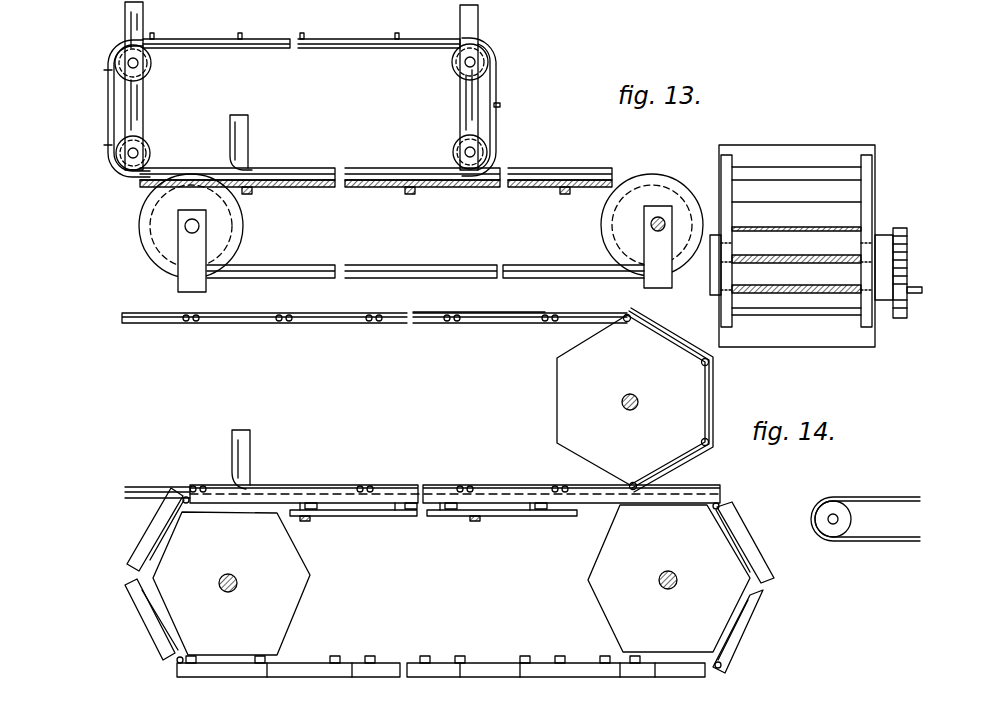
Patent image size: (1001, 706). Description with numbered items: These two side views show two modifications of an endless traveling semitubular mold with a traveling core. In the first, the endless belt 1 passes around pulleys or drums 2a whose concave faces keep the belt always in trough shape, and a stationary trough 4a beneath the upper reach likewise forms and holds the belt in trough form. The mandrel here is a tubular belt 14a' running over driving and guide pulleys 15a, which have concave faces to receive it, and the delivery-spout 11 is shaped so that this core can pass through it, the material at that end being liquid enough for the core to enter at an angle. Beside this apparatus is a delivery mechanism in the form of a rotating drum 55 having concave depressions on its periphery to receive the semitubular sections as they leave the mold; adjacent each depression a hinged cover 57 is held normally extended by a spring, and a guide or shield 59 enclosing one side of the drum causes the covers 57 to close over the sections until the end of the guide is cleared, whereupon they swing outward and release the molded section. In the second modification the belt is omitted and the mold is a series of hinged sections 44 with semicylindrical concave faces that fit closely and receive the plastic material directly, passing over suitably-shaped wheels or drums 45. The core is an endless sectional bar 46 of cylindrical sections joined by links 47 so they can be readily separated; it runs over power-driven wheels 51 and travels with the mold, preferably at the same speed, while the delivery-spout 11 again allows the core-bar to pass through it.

In FIG. 13, the endless belt 1 is at (373, 186).
In FIG. 13, the pulleys or drums 2a is at (232, 227).
In FIG. 13, the stationary trough 4a is at (515, 188).
In FIG. 13, the spout 11 is at (244, 142).
In FIG. 14, the spout 11 is at (245, 457).
In FIG. 13, the tubular belt 14a' is at (497, 90).
In FIG. 13, the driving and guide pulleys 15a is at (150, 157).
In FIG. 14, the sections 44 is at (331, 500).
In FIG. 14, the wheels or drums 45 is at (451, 580).
In FIG. 13, the endless sectional bar 46 is at (491, 321).
In FIG. 13, the links 47 is at (346, 315).
In FIG. 13, the power-driven wheels 51 is at (635, 400).
In FIG. 13, the rotating drum 55 is at (816, 246).
In FIG. 13, the cover 57 is at (796, 246).
In FIG. 13, the guide or shield 59 is at (726, 243).